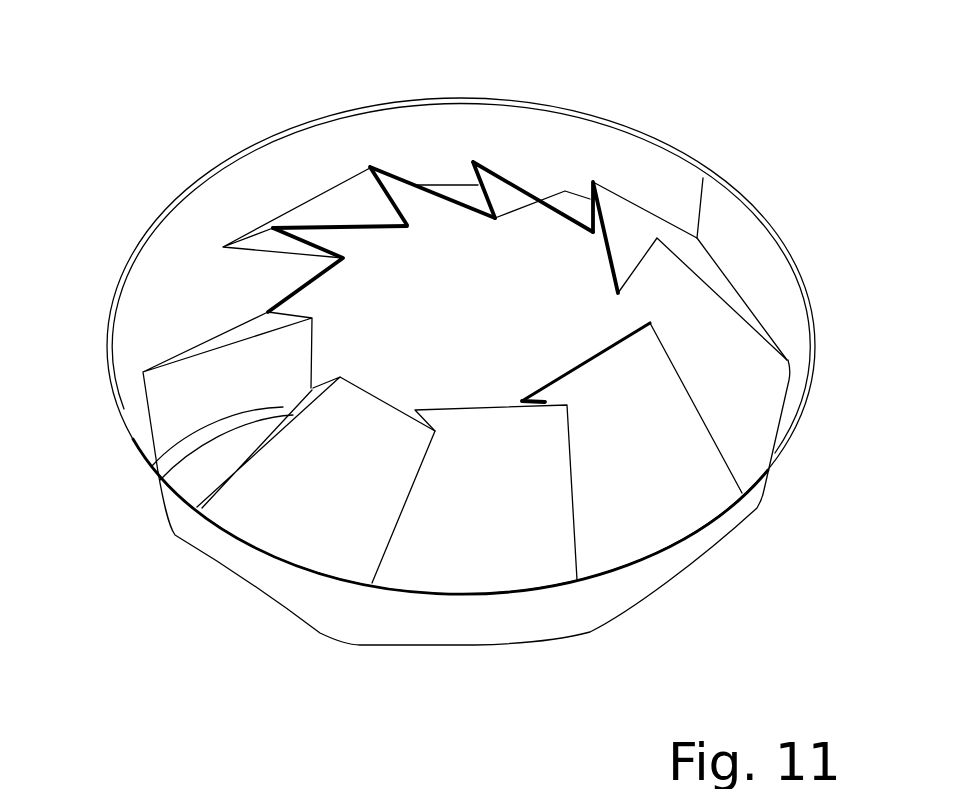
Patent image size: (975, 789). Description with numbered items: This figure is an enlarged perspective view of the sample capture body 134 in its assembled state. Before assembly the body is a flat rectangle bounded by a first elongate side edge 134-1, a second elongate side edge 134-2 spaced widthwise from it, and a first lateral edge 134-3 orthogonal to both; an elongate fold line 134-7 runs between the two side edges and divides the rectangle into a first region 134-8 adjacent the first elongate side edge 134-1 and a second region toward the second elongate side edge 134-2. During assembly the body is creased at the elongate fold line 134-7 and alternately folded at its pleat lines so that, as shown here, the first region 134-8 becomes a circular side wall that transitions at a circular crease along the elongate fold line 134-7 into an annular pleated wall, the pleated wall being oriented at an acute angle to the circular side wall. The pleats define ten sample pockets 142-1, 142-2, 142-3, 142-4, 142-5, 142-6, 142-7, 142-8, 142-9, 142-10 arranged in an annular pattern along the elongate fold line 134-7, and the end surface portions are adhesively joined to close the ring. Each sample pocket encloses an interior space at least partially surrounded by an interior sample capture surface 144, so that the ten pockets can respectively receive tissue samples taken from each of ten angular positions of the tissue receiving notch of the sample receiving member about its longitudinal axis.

The sample capture body 134 is at (803, 124).
The first elongate side edge 134-1 is at (636, 127).
The second elongate side edge 134-2 is at (380, 228).
The first lateral edge 134-3 is at (700, 208).
The elongate fold line 134-7 is at (142, 412).
The first region 134-8 is at (237, 197).
The sample pocket 142-1 is at (614, 271).
The sample pocket 142-2 is at (598, 340).
The sample pocket 142-3 is at (590, 497).
The sample pocket 142-4 is at (429, 519).
The sample pocket 142-5 is at (178, 450).
The sample pocket 142-6 is at (208, 328).
The sample pocket 142-7 is at (277, 265).
The sample pocket 142-8 is at (366, 198).
The sample pocket 142-9 is at (458, 179).
The sample pocket 142-10 is at (577, 176).
The interior sample capture surface 144 is at (220, 462).